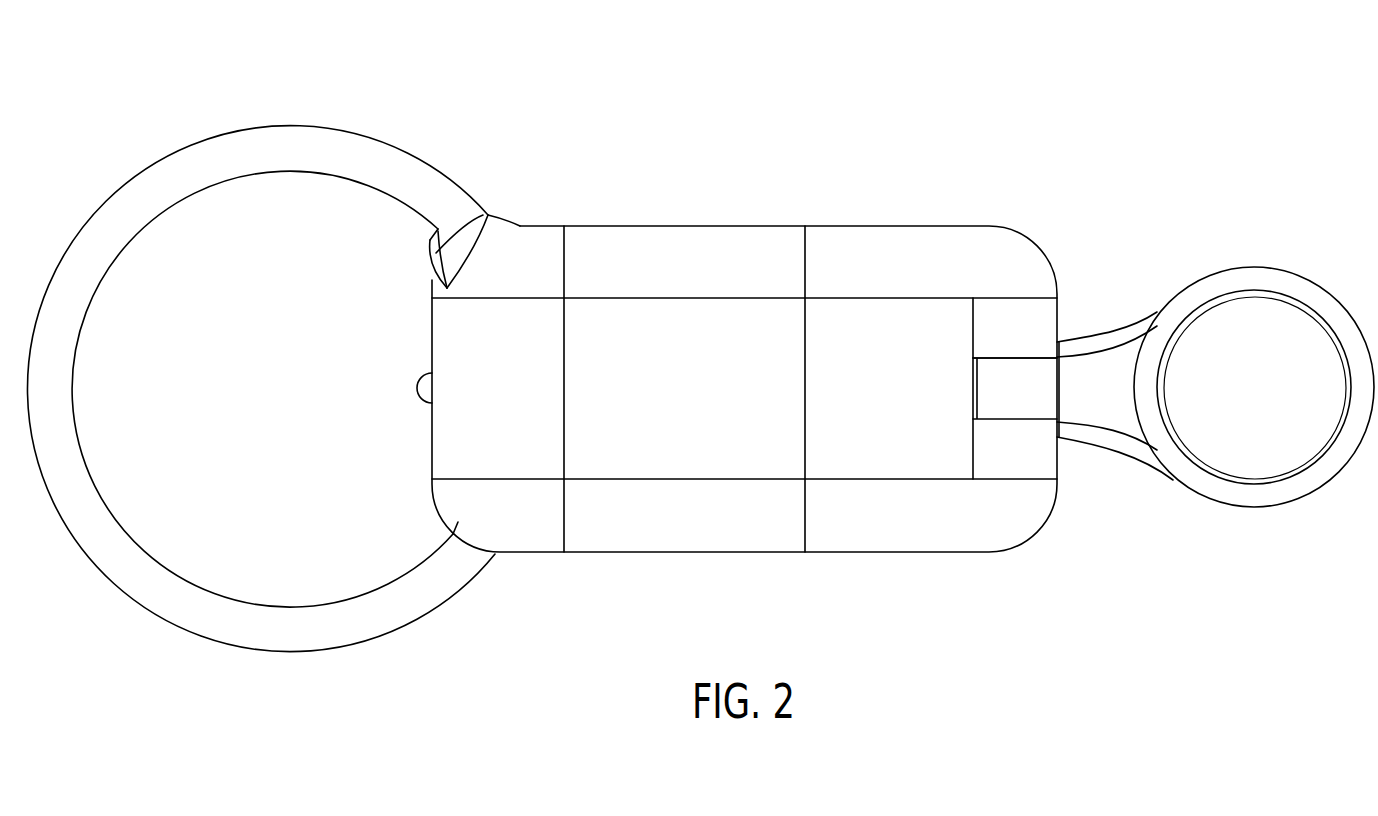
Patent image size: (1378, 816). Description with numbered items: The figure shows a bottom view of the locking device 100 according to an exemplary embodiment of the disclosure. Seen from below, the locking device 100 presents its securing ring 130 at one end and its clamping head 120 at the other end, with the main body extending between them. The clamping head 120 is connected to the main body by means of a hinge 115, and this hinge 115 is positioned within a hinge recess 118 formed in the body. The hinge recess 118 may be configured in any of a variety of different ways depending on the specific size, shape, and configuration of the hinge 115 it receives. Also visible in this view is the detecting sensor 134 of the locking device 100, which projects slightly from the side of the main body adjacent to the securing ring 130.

The locking device 100 is at (1110, 104).
The hinge 115 is at (1017, 373).
The hinge recess 118 is at (993, 405).
The clamping head 120 is at (1310, 495).
The securing ring 130 is at (252, 648).
The detecting sensor 134 is at (418, 390).